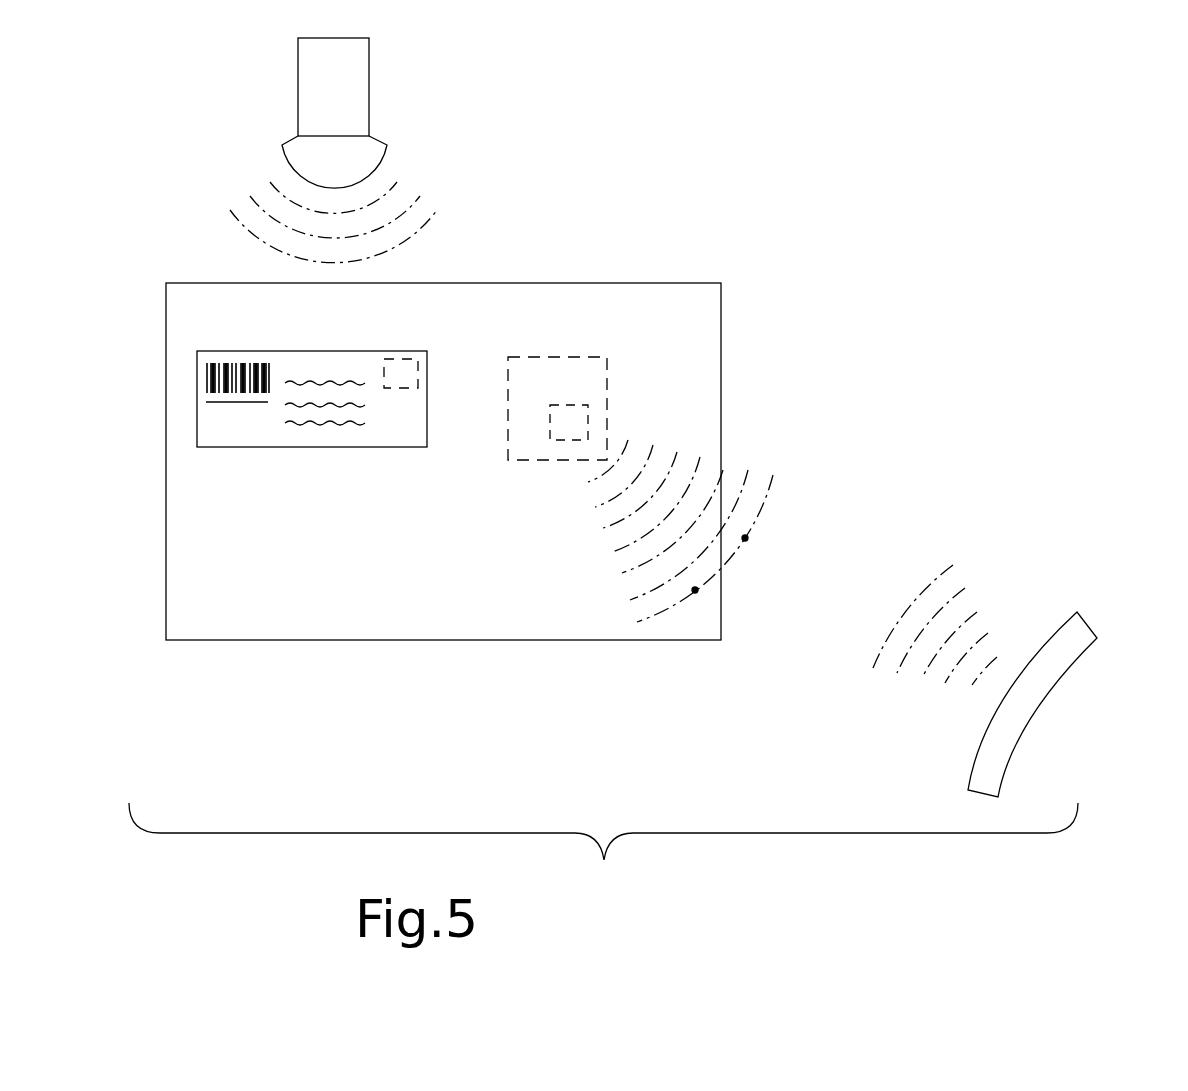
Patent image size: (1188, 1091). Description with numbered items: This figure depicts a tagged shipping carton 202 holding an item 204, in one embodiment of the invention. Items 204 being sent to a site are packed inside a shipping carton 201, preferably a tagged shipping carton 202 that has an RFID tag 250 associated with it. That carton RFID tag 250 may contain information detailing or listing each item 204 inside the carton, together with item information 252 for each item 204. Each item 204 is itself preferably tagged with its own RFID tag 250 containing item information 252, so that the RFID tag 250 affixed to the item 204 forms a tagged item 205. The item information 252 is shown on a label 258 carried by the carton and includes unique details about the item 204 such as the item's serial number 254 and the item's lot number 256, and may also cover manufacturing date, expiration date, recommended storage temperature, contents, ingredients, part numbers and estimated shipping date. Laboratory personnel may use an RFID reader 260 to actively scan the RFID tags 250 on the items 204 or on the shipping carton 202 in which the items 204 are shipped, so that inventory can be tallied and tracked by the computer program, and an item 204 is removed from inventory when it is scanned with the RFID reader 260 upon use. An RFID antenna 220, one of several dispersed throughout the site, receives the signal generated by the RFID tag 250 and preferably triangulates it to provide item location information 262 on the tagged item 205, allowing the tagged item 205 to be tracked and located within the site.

The RFID reader 260 is at (352, 95).
The item information 252 is at (218, 352).
The tagged shipping carton 202 is at (443, 398).
The shipping carton 201 is at (540, 293).
The label 258 is at (365, 448).
The serial number 254 is at (237, 402).
The lot number 256 is at (317, 383).
The RFID tag 250 is at (435, 372).
The item 204 is at (649, 341).
The tagged item 205 is at (568, 365).
The item location information 262 is at (695, 590).
The RFID antenna 220 is at (1020, 698).